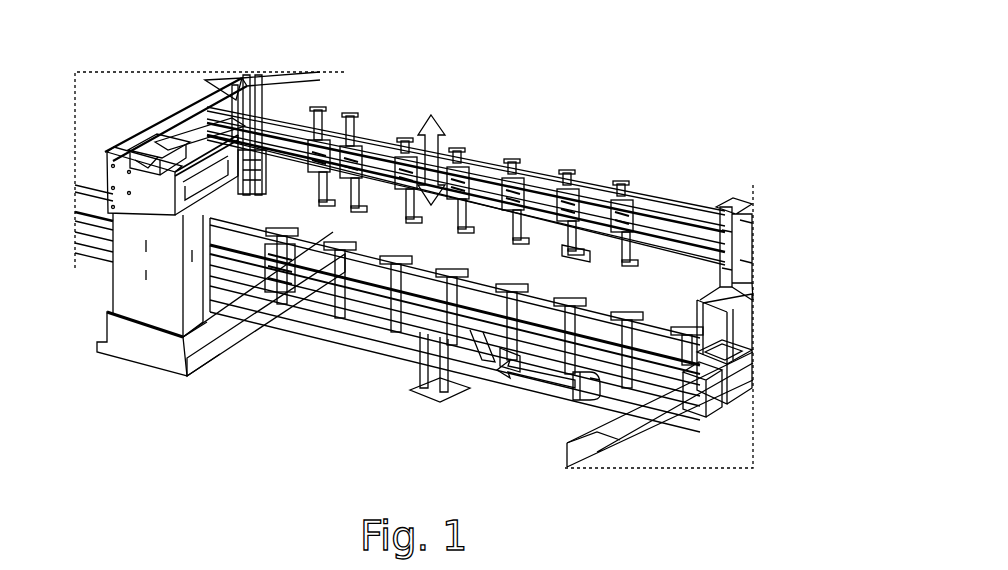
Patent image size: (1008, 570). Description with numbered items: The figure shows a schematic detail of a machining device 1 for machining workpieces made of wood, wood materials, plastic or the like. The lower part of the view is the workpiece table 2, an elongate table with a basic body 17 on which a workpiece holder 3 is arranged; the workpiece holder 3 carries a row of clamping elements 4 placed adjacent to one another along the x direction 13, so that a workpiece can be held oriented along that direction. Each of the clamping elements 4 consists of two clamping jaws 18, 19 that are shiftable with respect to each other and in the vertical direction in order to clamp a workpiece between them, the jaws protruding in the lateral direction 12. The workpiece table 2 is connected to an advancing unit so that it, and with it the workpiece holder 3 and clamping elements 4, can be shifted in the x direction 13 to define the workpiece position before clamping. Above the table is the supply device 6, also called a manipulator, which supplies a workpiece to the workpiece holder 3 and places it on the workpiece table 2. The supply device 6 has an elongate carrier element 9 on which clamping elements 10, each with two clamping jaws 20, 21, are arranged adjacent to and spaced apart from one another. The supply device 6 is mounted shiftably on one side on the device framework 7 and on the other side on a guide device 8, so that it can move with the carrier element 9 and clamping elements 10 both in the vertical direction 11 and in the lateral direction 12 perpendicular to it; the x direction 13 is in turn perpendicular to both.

The machining device 1 is at (648, 87).
The workpiece table 2 is at (520, 367).
The workpiece holder 3 is at (638, 303).
The clamping elements 4 is at (360, 327).
The supply device 6 is at (583, 187).
The device framework 7 is at (747, 343).
The guide device 8 is at (203, 110).
The carrier element 9 is at (670, 218).
The clamping elements 10 is at (477, 215).
The vertical direction 11 is at (410, 130).
The lateral direction 12 is at (223, 360).
The x direction 13 is at (500, 347).
The basic body 17 is at (420, 322).
The clamping jaw 18 is at (482, 332).
The clamping jaw 19 is at (560, 383).
The clamping jaw 20 is at (593, 260).
The clamping jaw 21 is at (587, 262).